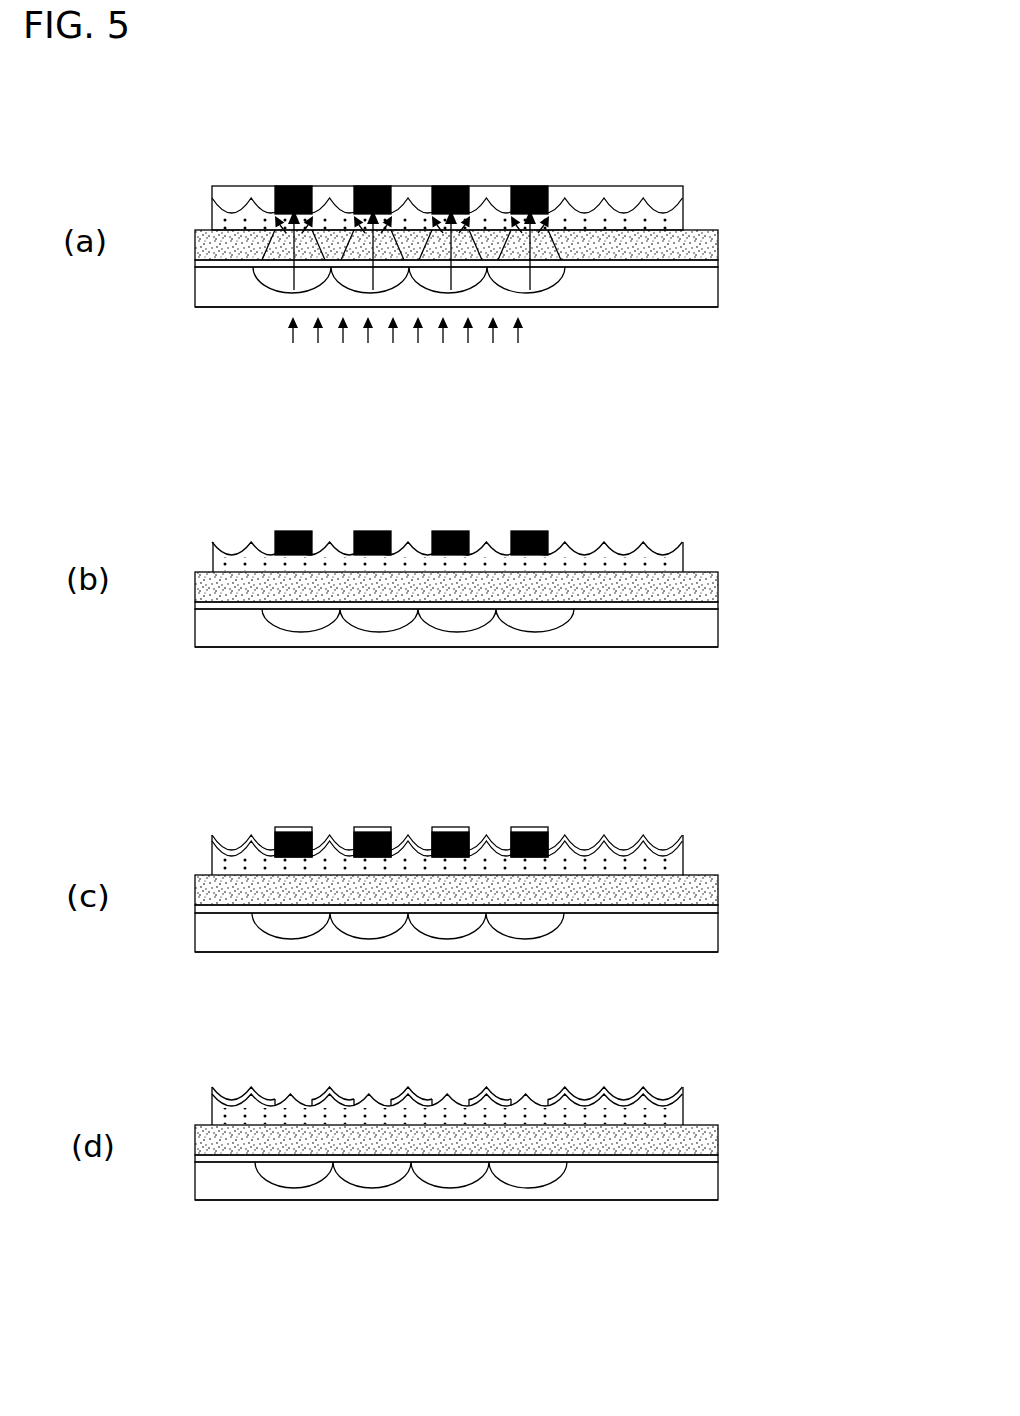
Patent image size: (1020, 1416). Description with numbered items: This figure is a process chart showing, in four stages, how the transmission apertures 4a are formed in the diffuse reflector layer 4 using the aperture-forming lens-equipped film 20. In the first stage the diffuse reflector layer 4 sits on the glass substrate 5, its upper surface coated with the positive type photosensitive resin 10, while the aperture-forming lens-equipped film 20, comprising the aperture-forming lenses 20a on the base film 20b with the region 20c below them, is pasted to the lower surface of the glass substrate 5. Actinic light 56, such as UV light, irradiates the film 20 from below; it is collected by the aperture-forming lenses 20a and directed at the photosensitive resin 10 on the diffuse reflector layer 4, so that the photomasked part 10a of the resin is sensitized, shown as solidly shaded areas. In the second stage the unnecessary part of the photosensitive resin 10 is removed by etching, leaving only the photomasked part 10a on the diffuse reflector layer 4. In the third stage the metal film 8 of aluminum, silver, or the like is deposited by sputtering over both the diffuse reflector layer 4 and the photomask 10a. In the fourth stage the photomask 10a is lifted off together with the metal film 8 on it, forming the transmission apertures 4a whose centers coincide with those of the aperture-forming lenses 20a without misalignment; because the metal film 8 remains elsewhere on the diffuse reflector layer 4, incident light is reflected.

The diffuse reflector layer 4 is at (665, 217).
The apertures 4a is at (528, 1090).
The glass substrate 5 is at (707, 247).
The metal film 8 is at (642, 840).
The positive type photosensitive resin 10 is at (617, 198).
The photomasked part 10a is at (528, 186).
The aperture-forming lens-equipped film 20 is at (583, 268).
The aperture-forming lenses 20a is at (540, 280).
The base film 20b is at (715, 262).
The back surface 20c is at (248, 297).
The actinic light 56 is at (405, 350).